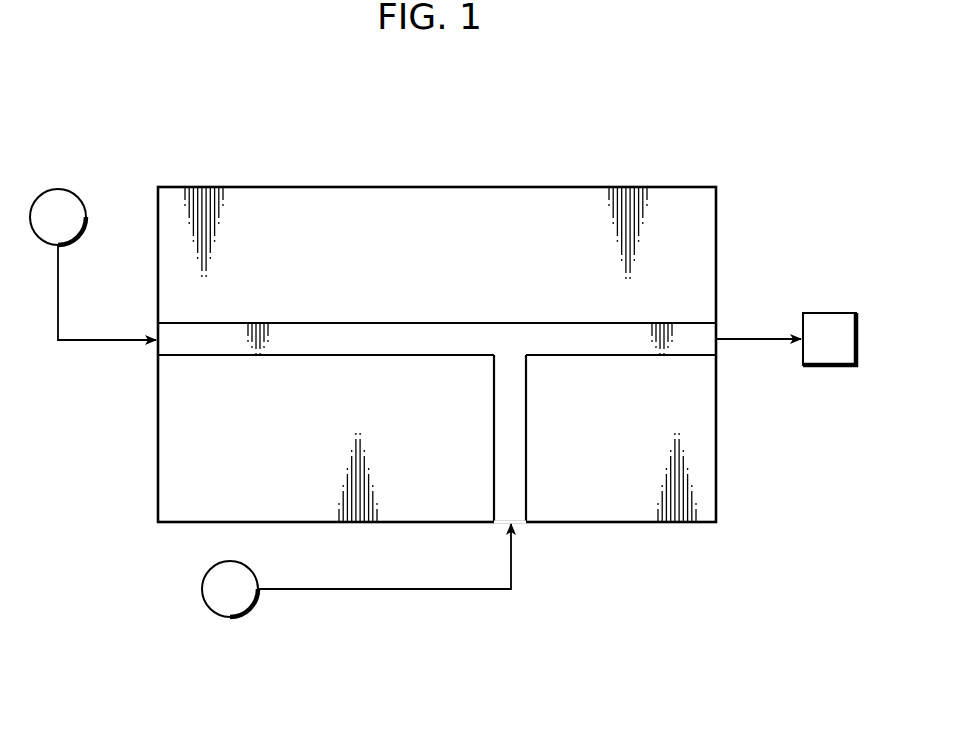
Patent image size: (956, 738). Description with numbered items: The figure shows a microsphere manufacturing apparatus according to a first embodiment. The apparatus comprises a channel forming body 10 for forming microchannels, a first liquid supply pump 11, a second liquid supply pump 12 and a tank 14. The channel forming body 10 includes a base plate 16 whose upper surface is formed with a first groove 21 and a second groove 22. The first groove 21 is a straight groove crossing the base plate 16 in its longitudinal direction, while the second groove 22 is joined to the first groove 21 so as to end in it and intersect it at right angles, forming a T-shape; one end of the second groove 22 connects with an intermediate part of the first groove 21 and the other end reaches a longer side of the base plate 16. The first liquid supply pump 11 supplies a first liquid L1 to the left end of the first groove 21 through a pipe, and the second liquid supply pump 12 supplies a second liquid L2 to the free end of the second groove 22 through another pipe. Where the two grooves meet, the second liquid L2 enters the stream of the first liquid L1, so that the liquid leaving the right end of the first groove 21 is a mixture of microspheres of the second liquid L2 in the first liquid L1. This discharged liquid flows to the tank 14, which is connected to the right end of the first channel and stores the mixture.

The channel forming body 10 is at (590, 120).
The first liquid supply pump 11 is at (56, 188).
The second liquid supply pump 12 is at (227, 620).
The tank 14 is at (822, 367).
The base plate 16 is at (348, 198).
The first groove 21 is at (302, 323).
The second groove 22 is at (518, 438).
The first liquid L1 is at (86, 338).
The second liquid L2 is at (453, 592).